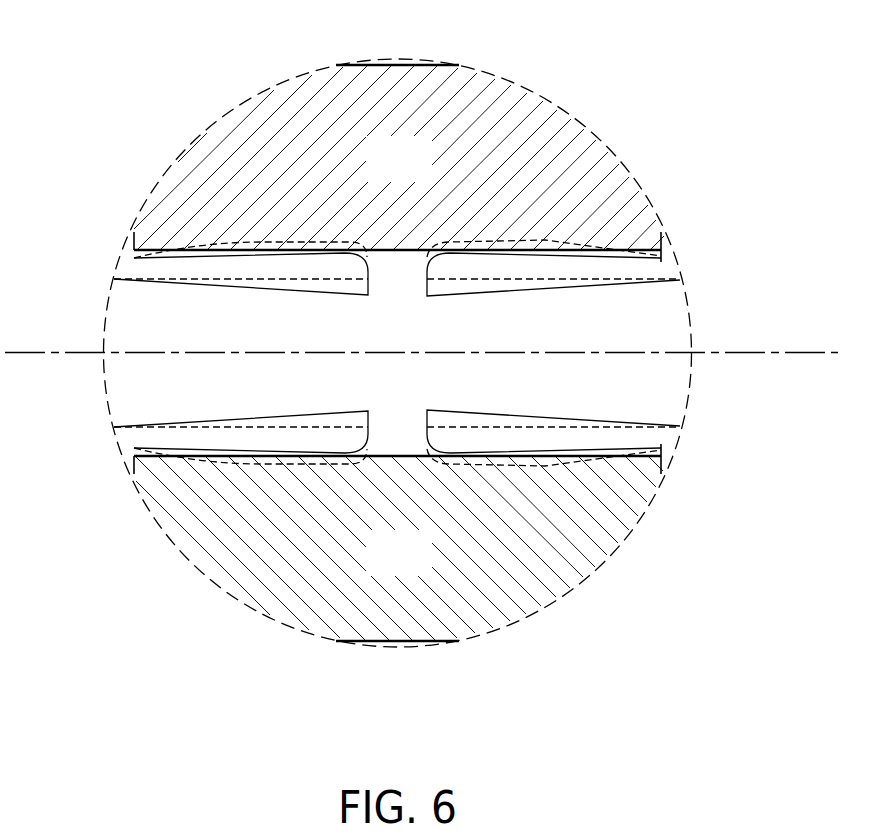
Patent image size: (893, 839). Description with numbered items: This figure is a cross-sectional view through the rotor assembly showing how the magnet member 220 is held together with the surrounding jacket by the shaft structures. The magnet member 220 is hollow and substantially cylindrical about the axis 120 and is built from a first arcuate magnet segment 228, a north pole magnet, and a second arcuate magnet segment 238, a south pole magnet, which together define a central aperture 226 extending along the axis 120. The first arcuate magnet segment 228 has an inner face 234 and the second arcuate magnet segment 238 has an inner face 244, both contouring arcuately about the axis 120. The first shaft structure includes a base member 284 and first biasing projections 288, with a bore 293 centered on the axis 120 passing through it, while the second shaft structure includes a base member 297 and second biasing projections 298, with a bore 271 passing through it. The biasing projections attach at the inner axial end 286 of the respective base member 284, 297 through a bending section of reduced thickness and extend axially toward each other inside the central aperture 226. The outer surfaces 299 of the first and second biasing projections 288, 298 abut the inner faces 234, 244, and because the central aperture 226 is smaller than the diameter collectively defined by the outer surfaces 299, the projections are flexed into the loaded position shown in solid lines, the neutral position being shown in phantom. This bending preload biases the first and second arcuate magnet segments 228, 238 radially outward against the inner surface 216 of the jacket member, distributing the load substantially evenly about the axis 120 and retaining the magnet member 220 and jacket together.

The axis 120 is at (768, 350).
The inner surface 216 is at (403, 63).
The magnet member 220 is at (496, 138).
The central aperture 226 is at (555, 334).
The first arcuate magnet segment 228 is at (421, 174).
The inner face 234 is at (398, 253).
The second arcuate magnet segment 238 is at (421, 569).
The inner face 244 is at (398, 454).
The bore 271 is at (163, 330).
The base member 284 is at (656, 276).
The inner axial end 286 is at (127, 262).
The first biasing projections 288 is at (460, 420).
The bore 293 is at (628, 375).
The base member 297 is at (125, 441).
The second biasing projections 298 is at (333, 420).
The outer surface 299 is at (330, 252).